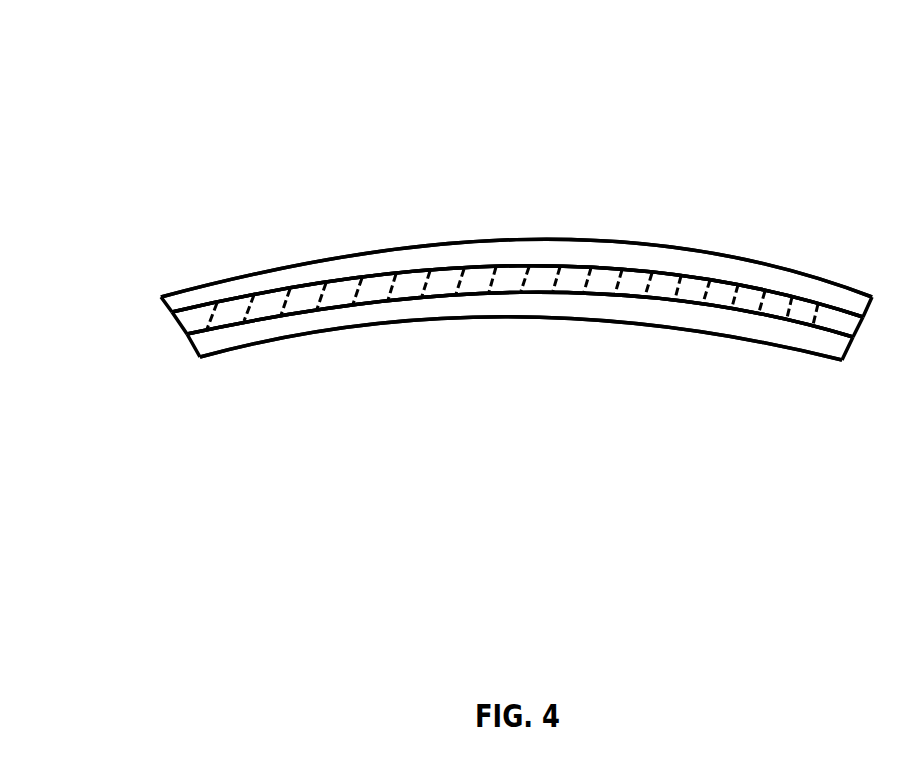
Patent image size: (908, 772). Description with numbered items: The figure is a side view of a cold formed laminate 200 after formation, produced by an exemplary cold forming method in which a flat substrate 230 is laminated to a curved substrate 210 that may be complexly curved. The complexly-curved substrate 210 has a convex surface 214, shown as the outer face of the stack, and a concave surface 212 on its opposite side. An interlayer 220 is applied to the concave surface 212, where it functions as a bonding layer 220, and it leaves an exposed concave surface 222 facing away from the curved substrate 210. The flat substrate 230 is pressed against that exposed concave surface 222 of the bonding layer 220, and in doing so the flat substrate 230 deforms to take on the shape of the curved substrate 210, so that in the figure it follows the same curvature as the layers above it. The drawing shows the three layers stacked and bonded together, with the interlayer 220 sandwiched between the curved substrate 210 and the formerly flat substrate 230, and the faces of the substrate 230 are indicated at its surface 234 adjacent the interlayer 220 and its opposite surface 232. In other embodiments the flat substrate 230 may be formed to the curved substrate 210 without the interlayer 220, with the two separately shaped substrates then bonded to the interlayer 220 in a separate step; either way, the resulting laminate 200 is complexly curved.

The curved laminated glass structure 200 is at (198, 82).
The curved substrate 210 is at (313, 268).
The concave surface 212 is at (200, 298).
The convex surface 214 is at (730, 253).
The interlayer 220 is at (440, 285).
The exposed concave surface 222 is at (517, 301).
The flat substrate 230 is at (340, 318).
The outer surface of second glass layer 232 is at (772, 343).
The inner surface of second glass layer 234 is at (243, 322).